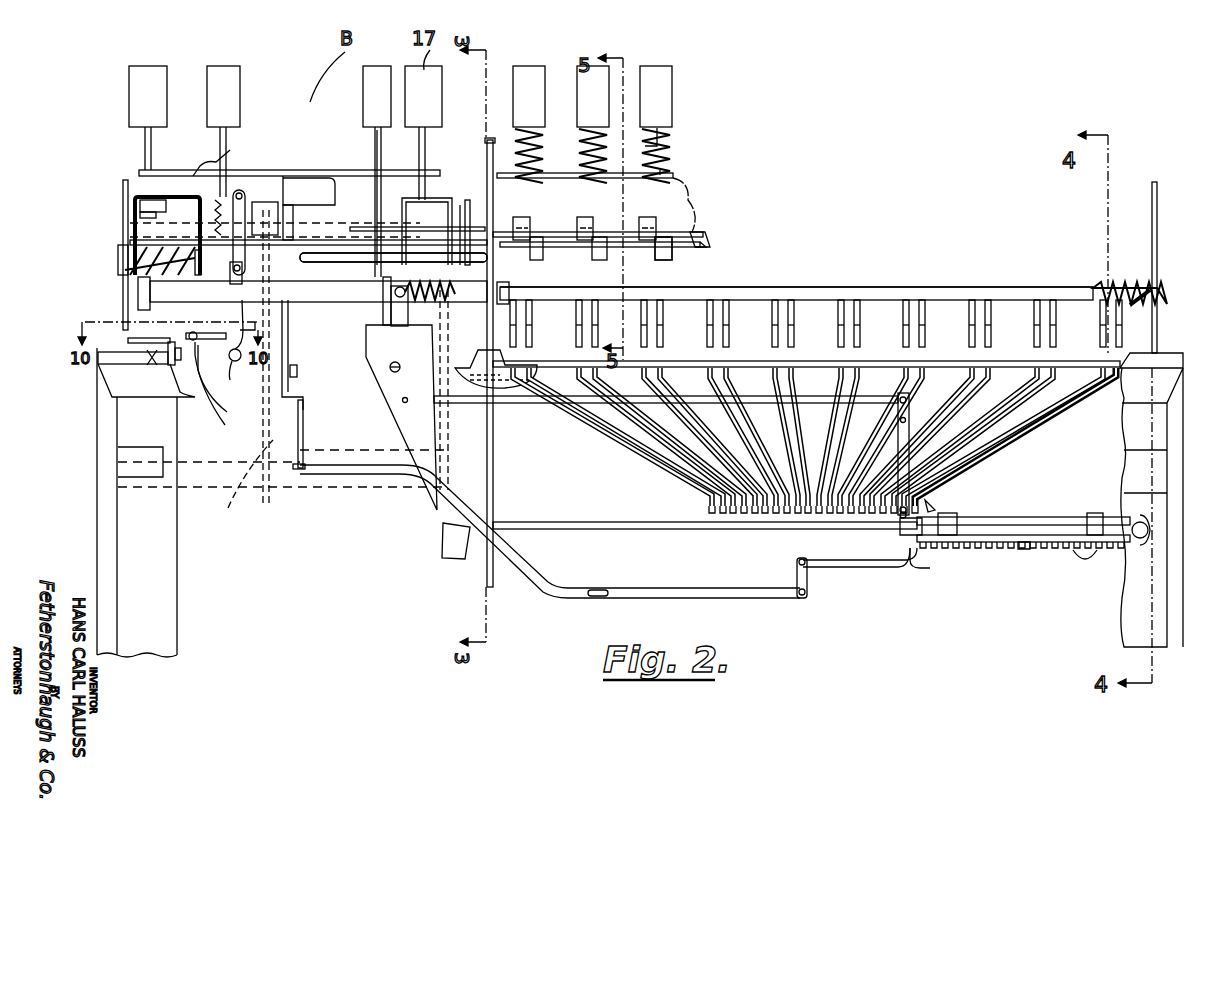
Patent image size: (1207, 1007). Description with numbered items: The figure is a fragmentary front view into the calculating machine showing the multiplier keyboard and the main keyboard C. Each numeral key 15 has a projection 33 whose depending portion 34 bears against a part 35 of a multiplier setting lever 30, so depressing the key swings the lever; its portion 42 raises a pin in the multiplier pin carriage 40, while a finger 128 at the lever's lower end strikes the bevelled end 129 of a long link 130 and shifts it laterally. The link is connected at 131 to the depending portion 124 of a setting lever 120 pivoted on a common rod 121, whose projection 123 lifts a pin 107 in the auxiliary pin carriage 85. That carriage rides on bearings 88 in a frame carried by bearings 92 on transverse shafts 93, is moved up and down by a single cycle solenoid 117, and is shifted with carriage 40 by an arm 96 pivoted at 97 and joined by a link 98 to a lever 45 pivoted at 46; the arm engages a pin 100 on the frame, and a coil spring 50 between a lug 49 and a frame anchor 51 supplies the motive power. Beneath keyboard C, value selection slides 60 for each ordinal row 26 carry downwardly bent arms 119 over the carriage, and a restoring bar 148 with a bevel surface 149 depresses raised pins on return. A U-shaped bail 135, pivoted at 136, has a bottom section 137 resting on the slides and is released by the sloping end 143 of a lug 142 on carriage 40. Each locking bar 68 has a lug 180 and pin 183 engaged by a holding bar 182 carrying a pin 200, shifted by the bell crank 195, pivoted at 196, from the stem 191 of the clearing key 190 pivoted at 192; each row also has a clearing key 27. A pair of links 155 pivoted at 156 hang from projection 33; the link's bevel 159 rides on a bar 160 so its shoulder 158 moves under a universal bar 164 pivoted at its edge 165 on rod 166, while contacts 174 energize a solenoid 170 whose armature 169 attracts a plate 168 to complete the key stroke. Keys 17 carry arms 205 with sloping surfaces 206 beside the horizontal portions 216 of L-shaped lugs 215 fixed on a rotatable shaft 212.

The key 17 is at (146, 76).
The key 15 is at (223, 72).
The clearing key 190 is at (368, 83).
The clearing key 27 is at (575, 68).
The ordinal row 26 is at (658, 130).
The arm 205 is at (140, 152).
The sloping surface 206 is at (135, 192).
The horizontal portion 216 is at (165, 198).
The L-shaped lug 215 is at (168, 208).
The contacts 174 is at (226, 150).
The shaft 212 is at (120, 255).
The lower link 155 is at (245, 205).
The pivot 156 is at (236, 276).
The depending portion 34 is at (282, 200).
The projection 33 is at (284, 190).
The part 35 is at (291, 250).
The stem 191 is at (380, 150).
The bell crank 195 is at (458, 213).
The pivot 196 is at (477, 205).
The pivot 192 is at (370, 272).
The multiplier setting lever 30 is at (300, 320).
The opposite edge 165 is at (140, 314).
The rod 166 is at (135, 340).
The shoulder 158 is at (241, 318).
The plate 168 is at (200, 385).
The universal bar 164 is at (227, 366).
The bar 160 is at (231, 365).
The bevelled surface 159 is at (258, 322).
The solenoid 170 is at (112, 370).
The armature 169 is at (190, 366).
The portion 42 is at (300, 366).
The finger 128 is at (305, 414).
The end 129 is at (298, 470).
The multiplier pin carriage 40 is at (232, 500).
The pivot 46 is at (392, 368).
The lever 45 is at (443, 510).
The lug 49 is at (385, 315).
The coil spring 50 is at (435, 305).
The long link 130 is at (543, 590).
The pin 200 is at (510, 225).
The outer end 143 is at (536, 262).
The pin 183 is at (617, 223).
The lug 142 is at (524, 252).
The lug 180 is at (683, 198).
The holding bar 182 is at (705, 222).
The locking bar 68 is at (645, 257).
The U-shaped bail 135 is at (828, 286).
The bottom section 137 is at (760, 286).
The pivot 136 is at (540, 300).
The value selection slide 60 is at (1060, 293).
The anchor 51 is at (1150, 288).
The pivot 97 is at (910, 367).
The arm 119 is at (670, 450).
The link 98 is at (550, 405).
The arm 96 is at (968, 453).
The transverse shaft 93 is at (617, 520).
The pin 100 is at (905, 536).
The setting lever 120 is at (870, 566).
The depending portion 124 is at (795, 573).
The common rod 121 is at (798, 560).
The connection 131 is at (802, 597).
The auxiliary pin carriage 85 is at (1050, 515).
The bearing 88 is at (1137, 520).
The restoring bar 148 is at (946, 502).
The bevel surface 149 is at (933, 510).
The bearing 92 is at (1050, 553).
The pin 107 is at (1025, 550).
The single cycle solenoid 117 is at (1085, 560).
The projection 123 is at (933, 560).
The main keyboard C is at (690, 173).